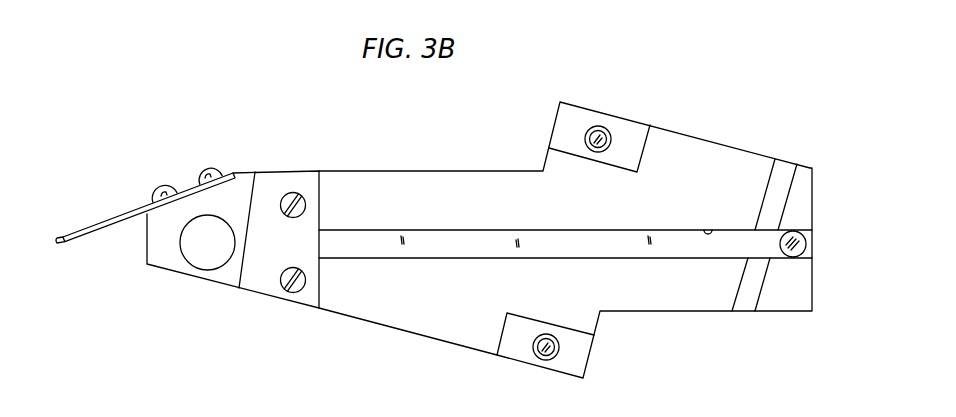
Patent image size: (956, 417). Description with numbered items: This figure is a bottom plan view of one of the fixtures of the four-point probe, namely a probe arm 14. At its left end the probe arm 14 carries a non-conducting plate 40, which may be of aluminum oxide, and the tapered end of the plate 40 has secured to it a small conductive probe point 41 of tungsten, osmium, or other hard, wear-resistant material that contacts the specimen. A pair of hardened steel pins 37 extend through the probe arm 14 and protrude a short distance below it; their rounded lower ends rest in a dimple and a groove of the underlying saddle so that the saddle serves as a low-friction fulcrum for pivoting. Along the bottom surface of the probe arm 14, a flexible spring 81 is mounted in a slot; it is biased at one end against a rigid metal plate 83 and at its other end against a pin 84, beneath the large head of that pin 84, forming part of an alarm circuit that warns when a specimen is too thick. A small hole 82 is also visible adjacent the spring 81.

The probe arm 14 is at (437, 178).
The hardened steel pins 37 is at (602, 134).
The non-conducting plate 40 is at (88, 227).
The conductive probe point 41 is at (57, 245).
The flexible spring 81 is at (595, 238).
The detent hole 82 is at (712, 230).
The rigid metal plate 83 is at (278, 175).
The pin 84 is at (793, 257).